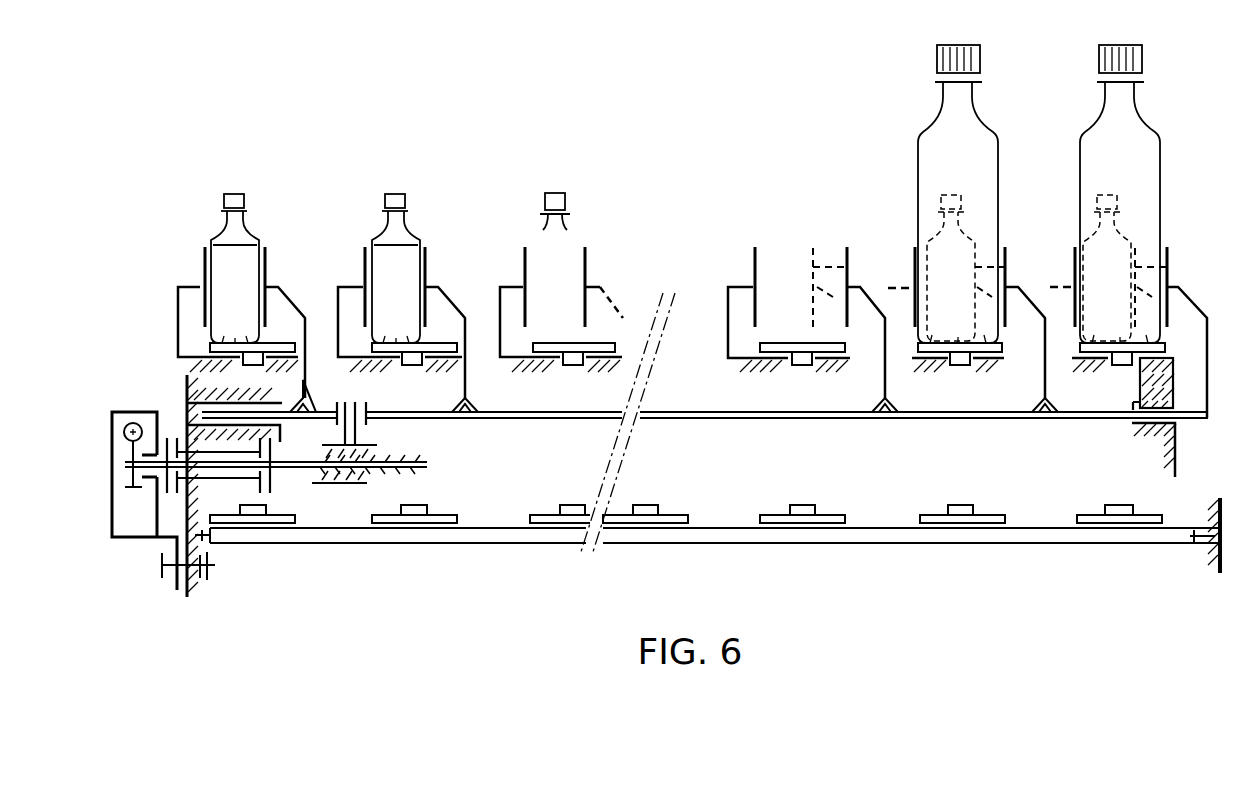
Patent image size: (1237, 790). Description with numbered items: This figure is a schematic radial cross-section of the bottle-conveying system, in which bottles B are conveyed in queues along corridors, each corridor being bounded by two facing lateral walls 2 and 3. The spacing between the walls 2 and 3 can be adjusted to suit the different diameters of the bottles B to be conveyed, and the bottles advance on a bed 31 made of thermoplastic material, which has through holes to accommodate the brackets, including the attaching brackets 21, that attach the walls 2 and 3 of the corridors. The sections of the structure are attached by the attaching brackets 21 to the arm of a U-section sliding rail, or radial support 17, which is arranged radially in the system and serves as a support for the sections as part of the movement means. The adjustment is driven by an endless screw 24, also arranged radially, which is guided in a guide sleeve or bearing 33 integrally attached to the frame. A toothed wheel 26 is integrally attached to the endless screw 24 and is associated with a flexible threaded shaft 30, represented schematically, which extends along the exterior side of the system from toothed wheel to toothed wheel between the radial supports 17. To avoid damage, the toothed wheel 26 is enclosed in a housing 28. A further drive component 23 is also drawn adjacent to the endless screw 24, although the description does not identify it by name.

The lateral wall 2 is at (204, 282).
The lateral wall 3 is at (266, 267).
The attaching bracket 21 is at (289, 296).
The sliding rail (radial support) 17 is at (527, 415).
The worm gear 23 is at (365, 443).
The endless screw 24 is at (295, 470).
The toothed wheel 26 is at (125, 492).
The housing 28 is at (112, 465).
The flexible threaded shaft 30 is at (128, 428).
The bed 31 is at (182, 368).
The guide sleeve or bearing 33 is at (217, 482).
The bottle B is at (393, 231).